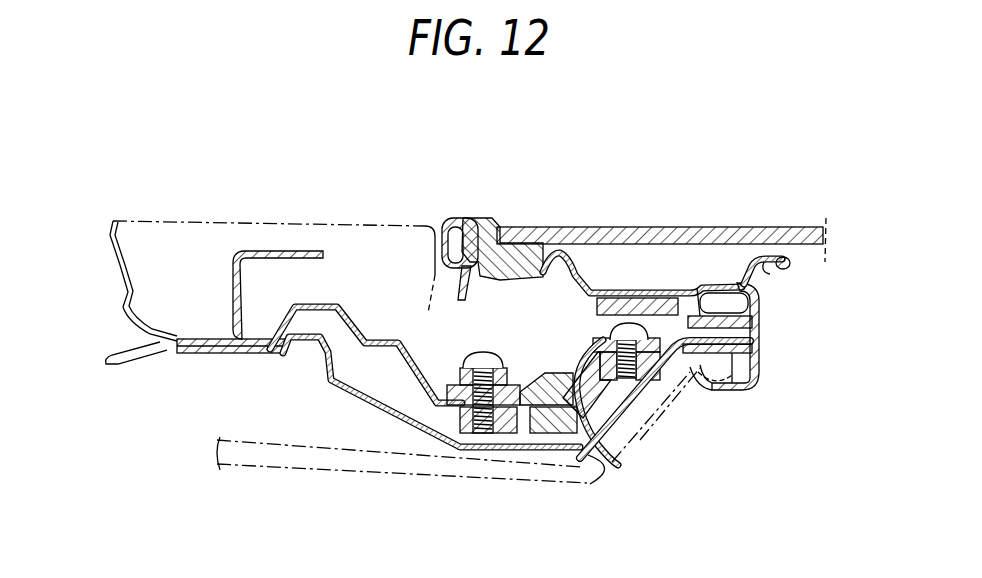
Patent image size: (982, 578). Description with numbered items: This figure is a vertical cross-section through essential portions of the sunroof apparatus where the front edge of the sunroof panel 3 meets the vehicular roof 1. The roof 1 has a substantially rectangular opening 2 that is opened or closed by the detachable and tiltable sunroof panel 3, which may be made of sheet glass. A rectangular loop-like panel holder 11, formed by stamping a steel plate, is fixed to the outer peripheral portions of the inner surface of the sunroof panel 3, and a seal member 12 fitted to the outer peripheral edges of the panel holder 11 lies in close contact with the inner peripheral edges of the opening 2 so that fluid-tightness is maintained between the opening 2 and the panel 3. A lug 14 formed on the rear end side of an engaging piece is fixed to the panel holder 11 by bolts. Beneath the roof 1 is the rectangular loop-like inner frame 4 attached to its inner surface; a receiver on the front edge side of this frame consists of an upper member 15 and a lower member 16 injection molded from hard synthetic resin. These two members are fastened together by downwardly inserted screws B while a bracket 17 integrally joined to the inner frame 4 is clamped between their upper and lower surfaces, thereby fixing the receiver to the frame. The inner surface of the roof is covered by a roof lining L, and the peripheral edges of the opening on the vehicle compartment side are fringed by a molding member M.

The vehicular roof 1 is at (307, 222).
The opening 2 is at (455, 220).
The sunroof panel 3 is at (748, 227).
The inner frame 4 is at (428, 443).
The panel holder 11 is at (664, 300).
The seal member 12 is at (483, 220).
The lug 14 is at (664, 316).
The upper member 15 is at (575, 448).
The lower member 16 is at (545, 445).
The bracket 17 is at (371, 343).
The screws B is at (629, 322).
The molding member M is at (760, 338).
The roof lining L is at (330, 473).